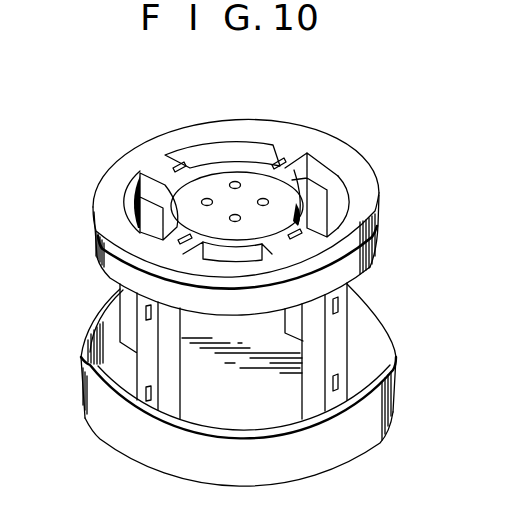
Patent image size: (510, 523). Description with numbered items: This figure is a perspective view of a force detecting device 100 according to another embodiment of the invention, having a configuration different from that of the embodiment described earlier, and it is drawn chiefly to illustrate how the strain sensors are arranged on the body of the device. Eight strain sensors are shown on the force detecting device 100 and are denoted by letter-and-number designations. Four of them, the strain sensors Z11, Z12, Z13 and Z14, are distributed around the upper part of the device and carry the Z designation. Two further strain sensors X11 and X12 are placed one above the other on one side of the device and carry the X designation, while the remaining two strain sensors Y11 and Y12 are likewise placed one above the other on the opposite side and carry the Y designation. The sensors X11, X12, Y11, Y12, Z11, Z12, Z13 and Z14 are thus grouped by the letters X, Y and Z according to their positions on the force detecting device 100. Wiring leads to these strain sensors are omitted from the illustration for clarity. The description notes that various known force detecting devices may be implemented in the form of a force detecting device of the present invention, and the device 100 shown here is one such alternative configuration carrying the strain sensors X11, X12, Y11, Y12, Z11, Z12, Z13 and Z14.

The force detecting device 100 is at (350, 162).
The strain sensor Z11 is at (176, 166).
The strain sensor Z12 is at (284, 158).
The strain sensor Z13 is at (302, 231).
The strain sensor Z14 is at (184, 238).
The strain sensor X11 is at (340, 306).
The strain sensor X12 is at (340, 380).
The strain sensor Y11 is at (146, 313).
The strain sensor Y12 is at (146, 392).